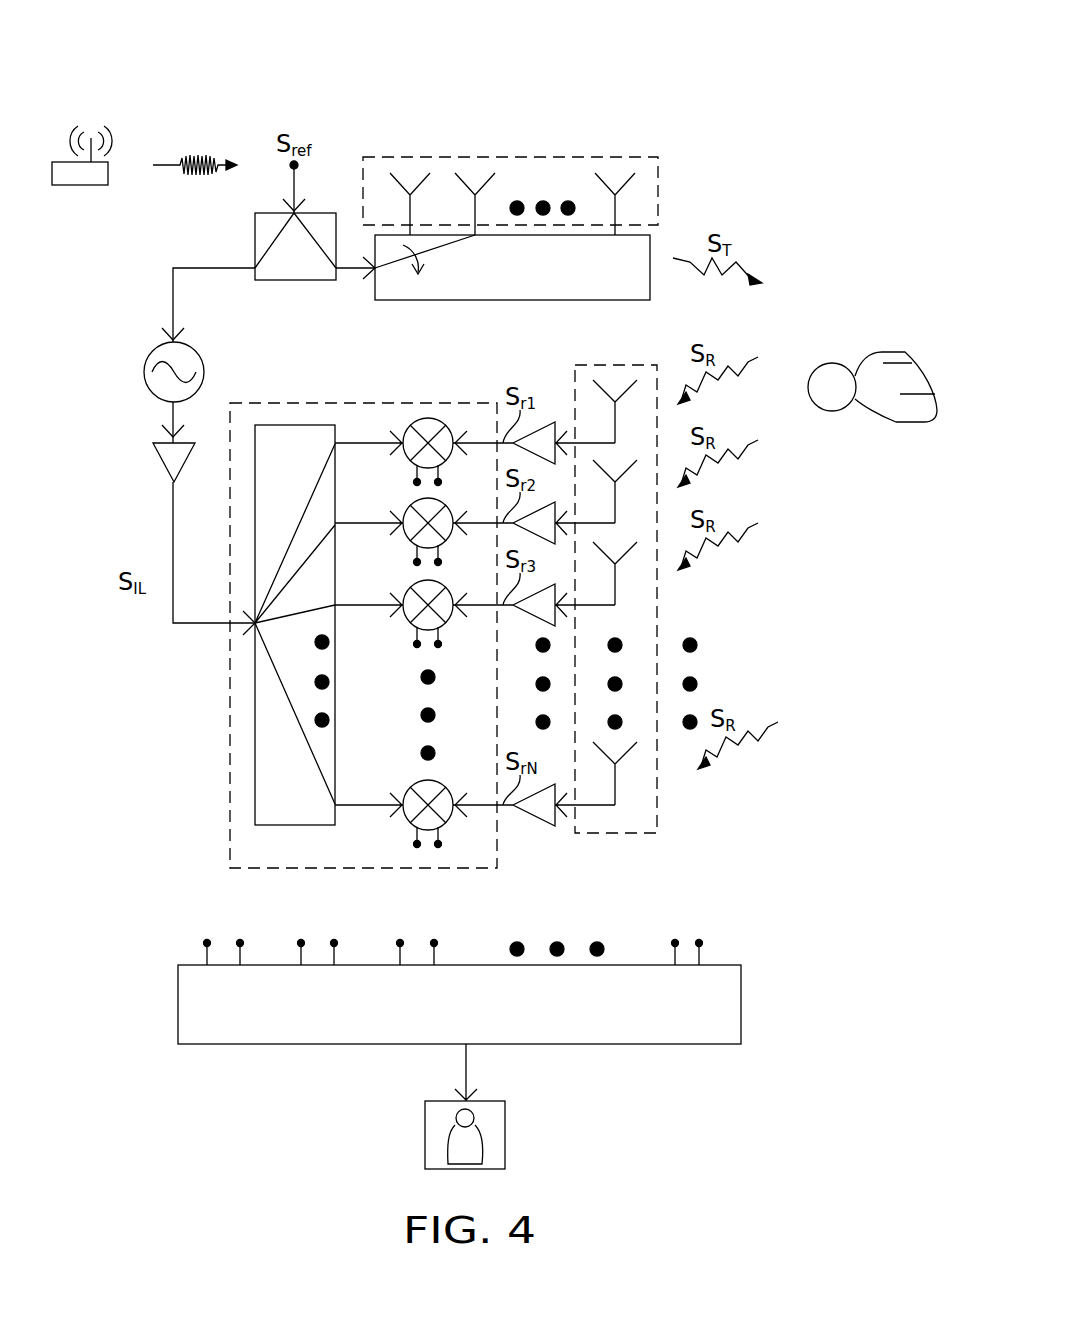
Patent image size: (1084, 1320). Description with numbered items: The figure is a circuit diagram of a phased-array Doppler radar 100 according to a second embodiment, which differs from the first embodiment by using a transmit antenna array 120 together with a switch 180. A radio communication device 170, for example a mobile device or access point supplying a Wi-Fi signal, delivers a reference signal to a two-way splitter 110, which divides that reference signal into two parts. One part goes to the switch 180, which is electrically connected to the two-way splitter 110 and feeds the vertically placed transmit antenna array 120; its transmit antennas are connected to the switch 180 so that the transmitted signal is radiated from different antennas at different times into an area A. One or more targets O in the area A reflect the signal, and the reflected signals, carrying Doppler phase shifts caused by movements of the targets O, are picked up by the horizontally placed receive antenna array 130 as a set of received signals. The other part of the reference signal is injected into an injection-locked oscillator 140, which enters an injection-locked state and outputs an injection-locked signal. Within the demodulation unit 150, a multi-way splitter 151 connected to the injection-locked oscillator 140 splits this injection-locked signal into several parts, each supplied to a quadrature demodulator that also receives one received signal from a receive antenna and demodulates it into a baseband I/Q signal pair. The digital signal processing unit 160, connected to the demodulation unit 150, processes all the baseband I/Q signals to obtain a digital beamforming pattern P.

The phased-array Doppler radar 100 is at (190, 78).
The two-way splitter 110 is at (255, 250).
The transmit antenna array 120 is at (542, 157).
The receive antenna array 130 is at (638, 833).
The injection-locked oscillator 140 is at (144, 372).
The demodulation unit 150 is at (230, 703).
The multi-way splitter 151 is at (292, 425).
The digital signal processing unit 160 is at (742, 1003).
The radio communication device 170 is at (78, 187).
The switch 180 is at (375, 292).
The area A is at (886, 278).
The target O is at (888, 410).
The digital beamforming pattern P is at (505, 1137).